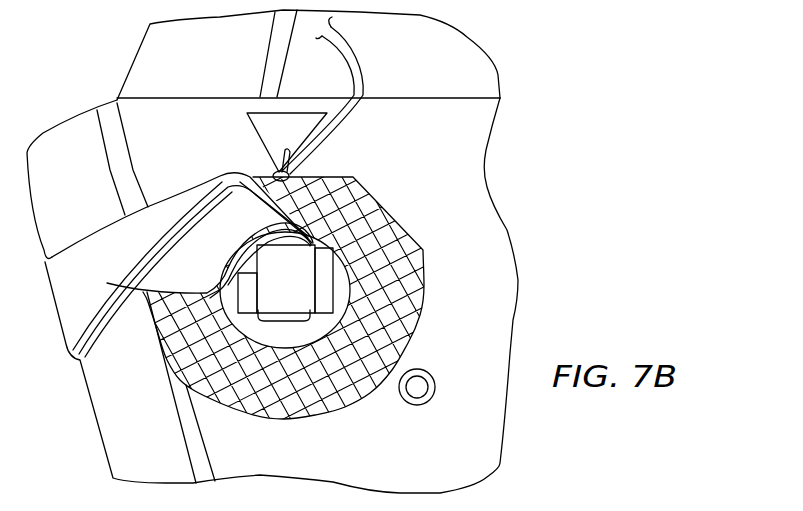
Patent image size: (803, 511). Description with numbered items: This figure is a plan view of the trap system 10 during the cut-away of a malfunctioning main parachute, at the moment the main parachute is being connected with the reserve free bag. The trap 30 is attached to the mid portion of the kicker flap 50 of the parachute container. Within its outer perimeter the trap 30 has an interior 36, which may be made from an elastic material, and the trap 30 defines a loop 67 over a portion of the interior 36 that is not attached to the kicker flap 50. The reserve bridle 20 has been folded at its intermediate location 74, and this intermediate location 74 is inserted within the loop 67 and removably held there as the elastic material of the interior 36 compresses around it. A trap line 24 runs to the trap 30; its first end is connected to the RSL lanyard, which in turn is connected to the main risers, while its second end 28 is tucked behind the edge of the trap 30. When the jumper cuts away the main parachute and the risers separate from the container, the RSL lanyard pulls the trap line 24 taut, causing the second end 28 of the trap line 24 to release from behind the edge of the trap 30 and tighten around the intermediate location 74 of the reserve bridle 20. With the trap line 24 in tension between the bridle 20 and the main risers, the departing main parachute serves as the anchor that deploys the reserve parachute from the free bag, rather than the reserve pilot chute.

The trap system 10 is at (524, 142).
The reserve bridle 20 is at (204, 255).
The trap line 24 is at (363, 64).
The second end of the trap line 28 is at (277, 172).
The trap 30 is at (372, 176).
The interior of the trap 36 is at (287, 323).
The kicker flap 50 is at (428, 455).
The loop 67 is at (293, 283).
The intermediate location of the reserve bridle 74 is at (310, 240).